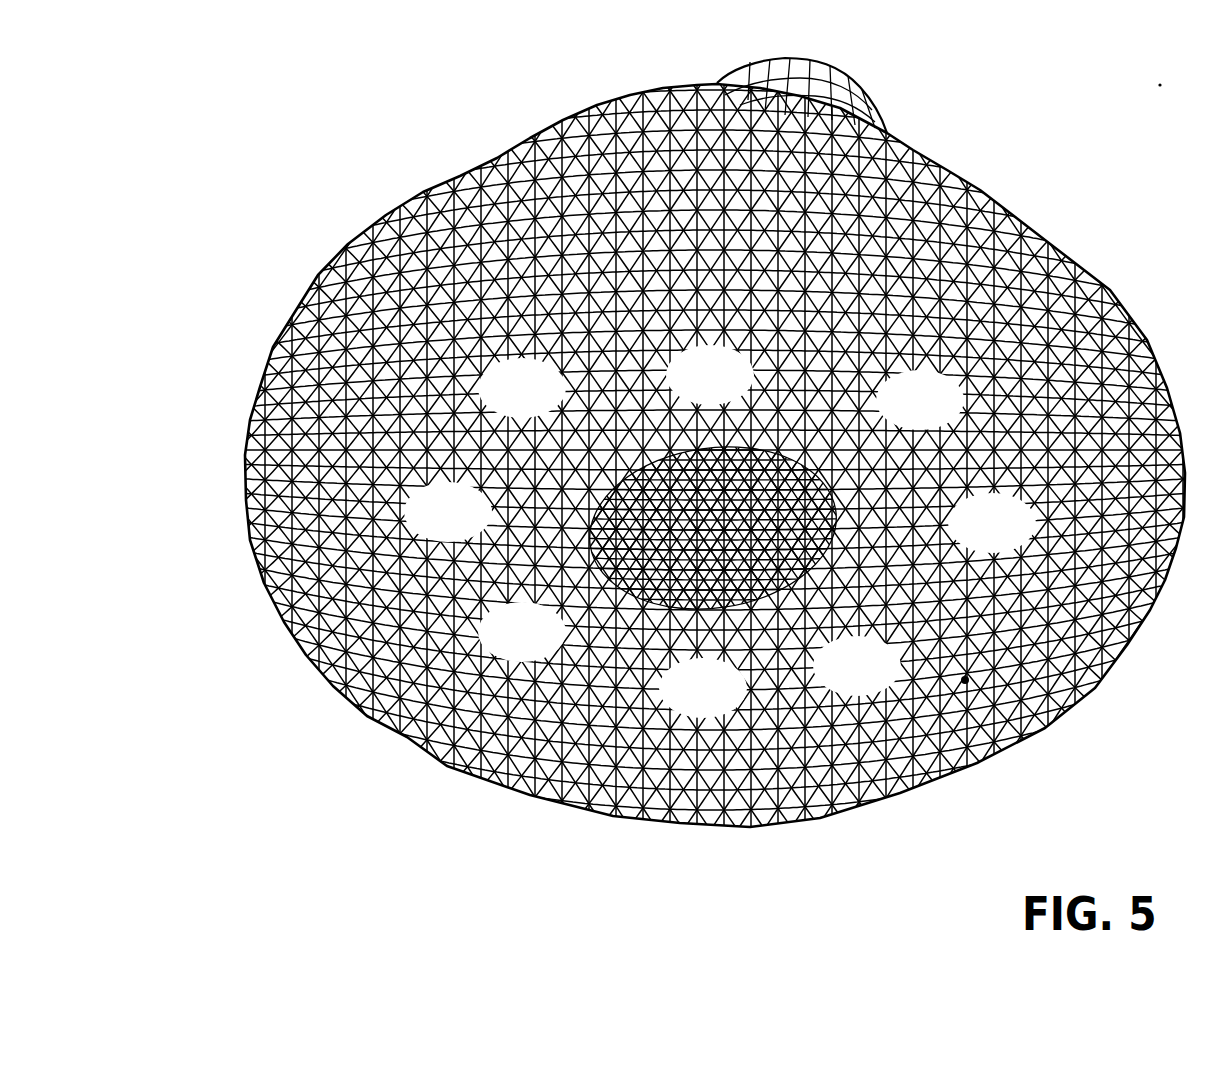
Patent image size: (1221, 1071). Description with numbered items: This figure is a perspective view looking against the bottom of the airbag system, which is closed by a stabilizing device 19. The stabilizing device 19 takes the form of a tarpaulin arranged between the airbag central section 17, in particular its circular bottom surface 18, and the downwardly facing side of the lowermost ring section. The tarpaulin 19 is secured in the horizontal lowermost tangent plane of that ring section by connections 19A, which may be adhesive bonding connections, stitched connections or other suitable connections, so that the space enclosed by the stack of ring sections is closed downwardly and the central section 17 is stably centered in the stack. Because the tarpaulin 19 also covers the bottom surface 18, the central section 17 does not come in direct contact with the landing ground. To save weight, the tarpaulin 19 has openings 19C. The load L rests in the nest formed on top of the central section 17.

The airbag central section 17 is at (735, 588).
The bottom surface 18 is at (713, 528).
The stabilizing device 19 is at (968, 684).
The connections 19A is at (461, 732).
The openings 19C is at (720, 531).
The load L is at (862, 92).